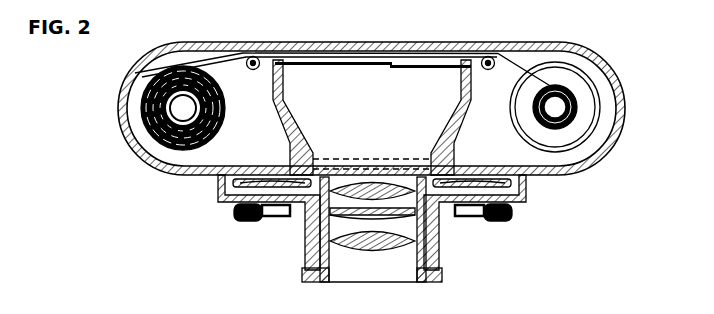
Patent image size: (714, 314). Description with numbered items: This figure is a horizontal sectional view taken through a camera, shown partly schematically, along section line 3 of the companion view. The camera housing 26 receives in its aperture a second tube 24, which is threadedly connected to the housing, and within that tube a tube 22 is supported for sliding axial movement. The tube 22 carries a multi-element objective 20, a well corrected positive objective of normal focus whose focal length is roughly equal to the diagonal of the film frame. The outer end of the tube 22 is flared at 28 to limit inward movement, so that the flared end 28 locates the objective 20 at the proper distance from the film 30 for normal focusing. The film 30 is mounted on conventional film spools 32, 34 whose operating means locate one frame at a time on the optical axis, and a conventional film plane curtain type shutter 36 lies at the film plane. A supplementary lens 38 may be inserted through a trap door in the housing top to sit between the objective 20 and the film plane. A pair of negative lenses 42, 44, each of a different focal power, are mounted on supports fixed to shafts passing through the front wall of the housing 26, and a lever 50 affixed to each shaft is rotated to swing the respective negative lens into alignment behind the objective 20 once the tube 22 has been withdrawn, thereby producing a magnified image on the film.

The section line 3- 3 is at (185, 190).
The multi-element objective 20 is at (373, 283).
The tube 22 is at (337, 263).
The second tube 24 is at (305, 243).
The camera housing 26 is at (118, 108).
The flared end 28 is at (438, 283).
The film 30 is at (413, 42).
The film spool 32 is at (152, 88).
The film spool 34 is at (590, 105).
The film plane curtain type shutter 36 is at (320, 62).
The supplementary lens 38 is at (372, 157).
The negative lens 42 is at (262, 180).
The negative lens 44 is at (478, 180).
The lever 50 is at (233, 212).